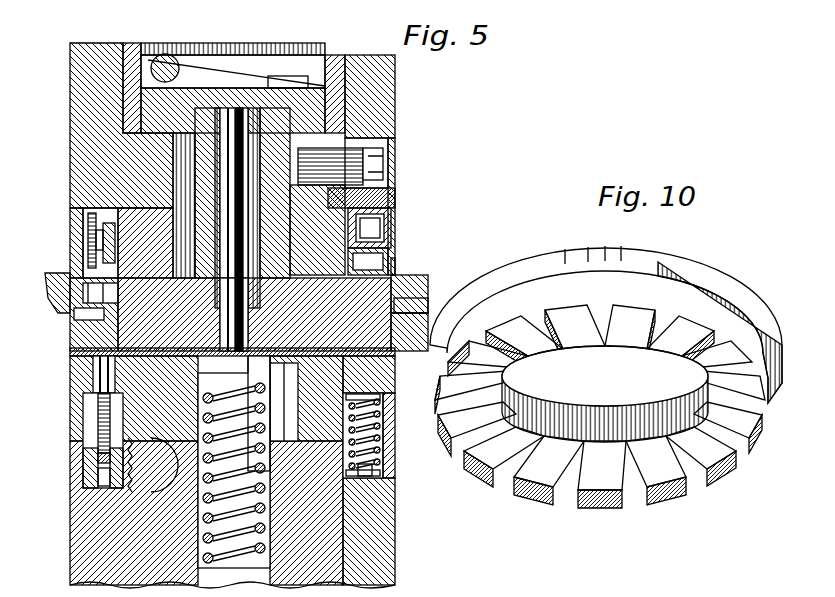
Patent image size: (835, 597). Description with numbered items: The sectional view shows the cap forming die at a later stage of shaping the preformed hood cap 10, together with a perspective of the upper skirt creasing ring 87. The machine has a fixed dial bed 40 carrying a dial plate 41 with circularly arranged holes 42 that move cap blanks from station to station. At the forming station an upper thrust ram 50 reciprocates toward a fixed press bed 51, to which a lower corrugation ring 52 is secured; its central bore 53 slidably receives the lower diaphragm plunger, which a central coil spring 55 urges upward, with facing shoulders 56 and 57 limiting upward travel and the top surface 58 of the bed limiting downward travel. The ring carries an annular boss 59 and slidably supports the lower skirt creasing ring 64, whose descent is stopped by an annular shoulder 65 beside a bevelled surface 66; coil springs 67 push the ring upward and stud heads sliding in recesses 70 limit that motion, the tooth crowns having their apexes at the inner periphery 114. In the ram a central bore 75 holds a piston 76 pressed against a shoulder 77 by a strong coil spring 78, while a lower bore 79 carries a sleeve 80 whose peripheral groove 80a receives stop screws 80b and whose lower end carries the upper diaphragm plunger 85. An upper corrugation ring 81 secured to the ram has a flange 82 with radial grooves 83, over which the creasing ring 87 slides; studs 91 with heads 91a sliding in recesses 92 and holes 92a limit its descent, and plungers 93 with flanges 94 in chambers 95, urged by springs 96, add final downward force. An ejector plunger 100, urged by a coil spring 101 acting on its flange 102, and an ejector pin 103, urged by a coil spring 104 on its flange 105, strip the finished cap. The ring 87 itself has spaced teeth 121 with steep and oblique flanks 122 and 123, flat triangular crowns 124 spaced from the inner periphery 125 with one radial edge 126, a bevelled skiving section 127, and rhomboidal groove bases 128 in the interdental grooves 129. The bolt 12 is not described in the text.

In FIG. 5, the preformed hood cap 10 is at (372, 372).
In FIG. 5, the bolt 12 is at (95, 373).
In FIG. 5, the fixed dial bed 40 is at (388, 352).
In FIG. 5, the dial plate 41 is at (405, 268).
In FIG. 5, the circularly arranged holes 42 is at (420, 300).
In FIG. 5, the upper thrust ram 50 is at (388, 58).
In FIG. 5, the fixed press bed 51 is at (66, 553).
In FIG. 5, the lower corrugation ring 52 is at (110, 440).
In FIG. 5, the central bore 53 is at (110, 457).
In FIG. 5, the central coil spring 55 is at (185, 520).
In FIG. 5, the annular facing shoulder 56 is at (195, 500).
In FIG. 5, the annular facing shoulder 57 is at (115, 425).
In FIG. 5, the top surface 58 is at (120, 490).
In FIG. 5, the annular boss 59 is at (95, 353).
In FIG. 5, the lower skirt creasing ring 64 is at (375, 397).
In FIG. 5, the upwardly facing annular shoulder 65 is at (375, 408).
In FIG. 5, the bevelled surface 66 is at (375, 385).
In FIG. 5, the coil springs 67 is at (362, 466).
In FIG. 5, the recesses 70 is at (110, 475).
In FIG. 5, the central bore 75 is at (325, 72).
In FIG. 5, the piston 76 is at (204, 85).
In FIG. 5, the shoulder 77 is at (340, 130).
In FIG. 5, the strong coil spring 78 is at (262, 70).
In FIG. 5, the central bore 79 is at (165, 160).
In FIG. 5, the sleeve 80 is at (76, 195).
In FIG. 5, the peripheral groove 80a is at (130, 178).
In FIG. 5, the screws 80b is at (372, 143).
In FIG. 5, the upper corrugation ring 81 is at (385, 218).
In FIG. 5, the flange 82 is at (392, 300).
In FIG. 5, the radial grooves 83 is at (254, 314).
In FIG. 5, the upper diaphragm plunger 85 is at (237, 208).
In FIG. 5, the upper skirt creasing ring 87 is at (386, 250).
In FIG. 10, the upper skirt creasing ring 87 is at (722, 323).
In FIG. 5, the studs 91 is at (70, 330).
In FIG. 5, the heads 91a is at (88, 228).
In FIG. 5, the recesses 92 is at (78, 210).
In FIG. 5, the holes 92a is at (66, 314).
In FIG. 5, the plungers 93 is at (378, 245).
In FIG. 5, the flanges 94 is at (378, 228).
In FIG. 5, the chambers 95 is at (387, 180).
In FIG. 5, the springs 96 is at (385, 200).
In FIG. 5, the ejector plunger 100 is at (375, 421).
In FIG. 5, the coil spring 101 is at (188, 146).
In FIG. 5, the flange 102 is at (170, 245).
In FIG. 5, the ejector pin 103 is at (358, 463).
In FIG. 5, the coil spring 104 is at (300, 76).
In FIG. 5, the flange 105 is at (234, 225).
In FIG. 5, the inner periphery 114 is at (125, 392).
In FIG. 10, the teeth 121 is at (645, 320).
In FIG. 10, the flank 122 is at (505, 318).
In FIG. 10, the flank 123 is at (670, 312).
In FIG. 10, the flat triangular crown 124 is at (446, 448).
In FIG. 10, the inner periphery 125 is at (651, 397).
In FIG. 10, the edge 126 is at (604, 315).
In FIG. 10, the bevelled section 127 is at (604, 397).
In FIG. 10, the groove base 128 is at (568, 312).
In FIG. 10, the interdental groove 129 is at (577, 342).